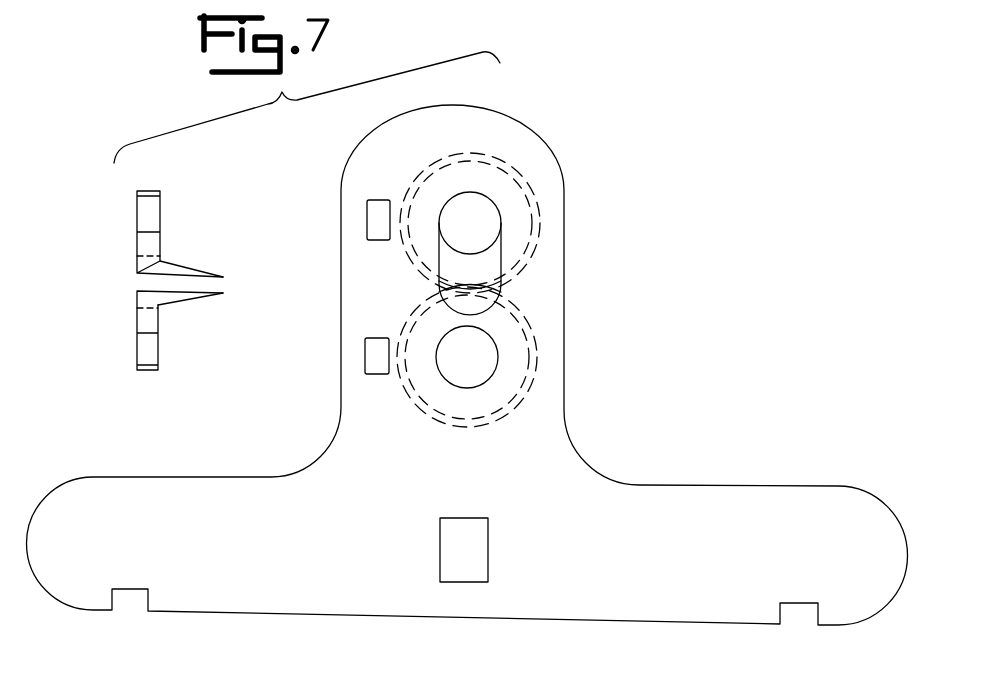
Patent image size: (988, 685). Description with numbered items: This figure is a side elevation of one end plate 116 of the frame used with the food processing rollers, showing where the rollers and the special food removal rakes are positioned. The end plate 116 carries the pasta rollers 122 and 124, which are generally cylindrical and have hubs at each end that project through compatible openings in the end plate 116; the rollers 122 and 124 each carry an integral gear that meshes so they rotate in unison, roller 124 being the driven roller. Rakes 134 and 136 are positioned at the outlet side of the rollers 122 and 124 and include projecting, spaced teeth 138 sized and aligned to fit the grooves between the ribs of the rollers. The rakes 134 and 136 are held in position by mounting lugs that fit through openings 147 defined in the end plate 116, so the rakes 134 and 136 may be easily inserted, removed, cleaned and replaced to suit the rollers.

The end plate 116 is at (853, 503).
The pasta roller 122 is at (528, 213).
The pasta roller 124 is at (530, 385).
The openings 147 is at (372, 208).
The rake 134 is at (137, 214).
The rake 136 is at (133, 320).
The teeth 138 is at (190, 265).